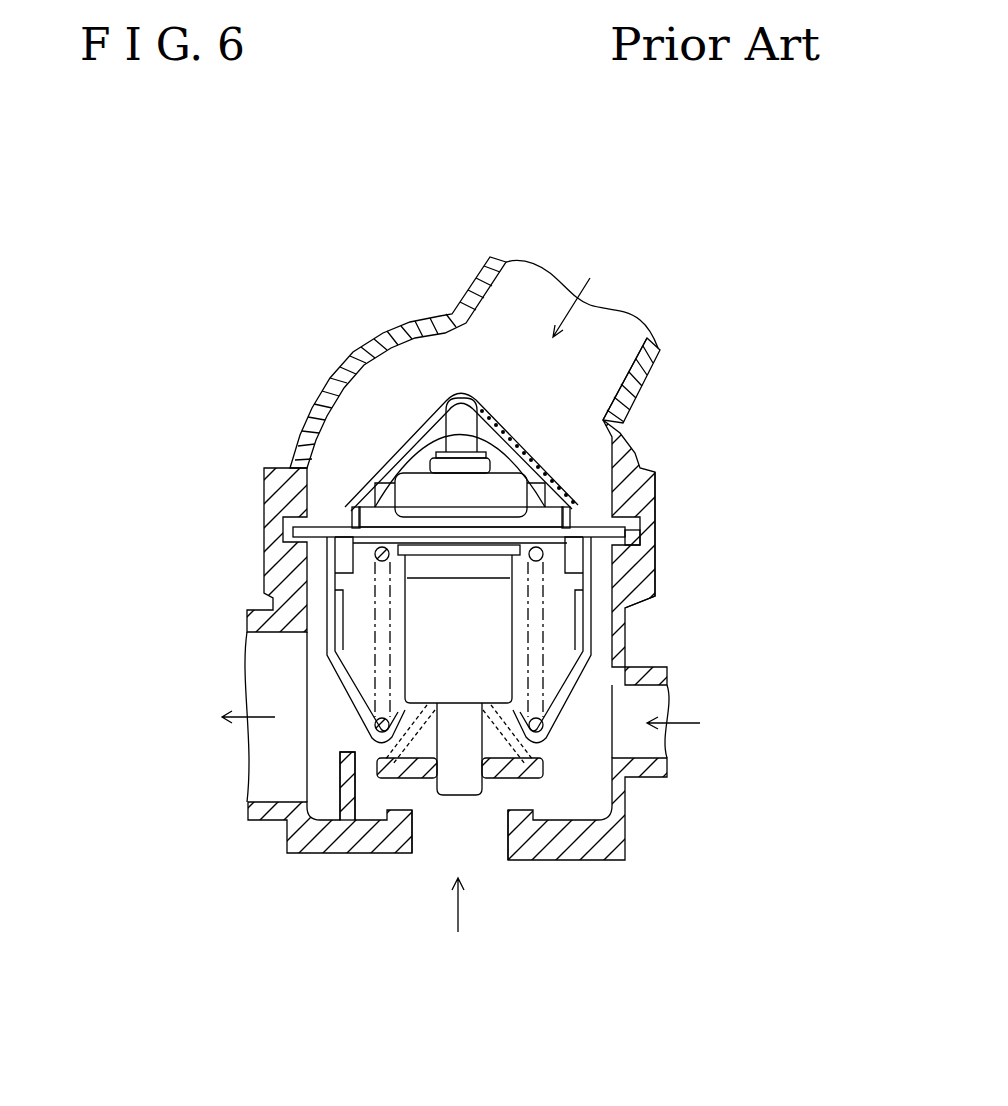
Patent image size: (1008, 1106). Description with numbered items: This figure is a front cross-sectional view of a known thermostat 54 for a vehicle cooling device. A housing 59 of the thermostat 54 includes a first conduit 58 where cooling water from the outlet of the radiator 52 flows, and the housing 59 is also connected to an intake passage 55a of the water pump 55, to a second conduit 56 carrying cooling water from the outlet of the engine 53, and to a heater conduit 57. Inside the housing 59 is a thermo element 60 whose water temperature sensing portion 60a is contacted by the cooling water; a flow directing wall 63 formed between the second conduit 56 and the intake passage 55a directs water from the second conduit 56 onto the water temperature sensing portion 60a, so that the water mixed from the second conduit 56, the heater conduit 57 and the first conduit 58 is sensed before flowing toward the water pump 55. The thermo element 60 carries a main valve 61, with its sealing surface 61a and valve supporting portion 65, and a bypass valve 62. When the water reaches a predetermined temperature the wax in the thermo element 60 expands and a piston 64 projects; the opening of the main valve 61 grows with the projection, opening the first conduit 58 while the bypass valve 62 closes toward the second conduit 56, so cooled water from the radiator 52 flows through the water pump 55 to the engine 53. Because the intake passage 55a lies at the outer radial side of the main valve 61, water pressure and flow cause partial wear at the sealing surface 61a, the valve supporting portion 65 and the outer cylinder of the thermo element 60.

The radiator 52 is at (635, 273).
The engine 53 is at (483, 934).
The thermostat 54 is at (323, 340).
The water pump 55 is at (151, 722).
The intake passage 55a is at (268, 658).
The second conduit 56 is at (440, 838).
The heater conduit 57 is at (655, 703).
The first conduit 58 is at (580, 437).
The housing 59 is at (657, 574).
The thermo element 60 is at (513, 622).
The water temperature sensing portion 60a is at (500, 665).
The main valve 61 is at (372, 483).
The sealing surface 61a is at (586, 512).
The bypass valve 62 is at (515, 782).
The flow directing wall 63 is at (340, 775).
The piston 64 is at (449, 412).
The valve supporting portion 65 is at (352, 692).